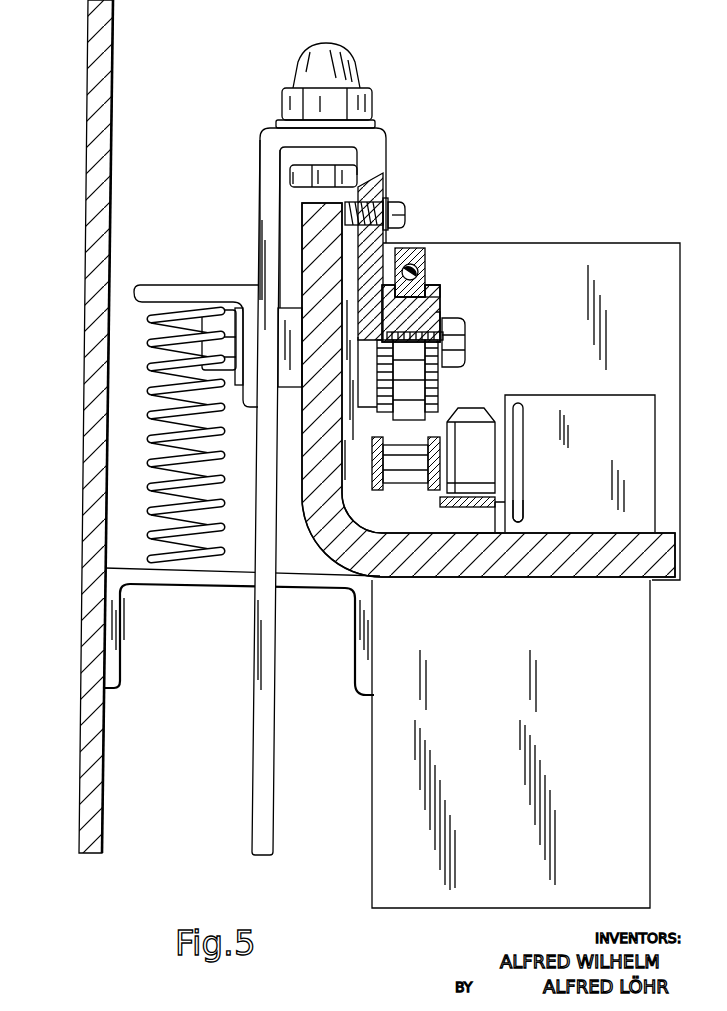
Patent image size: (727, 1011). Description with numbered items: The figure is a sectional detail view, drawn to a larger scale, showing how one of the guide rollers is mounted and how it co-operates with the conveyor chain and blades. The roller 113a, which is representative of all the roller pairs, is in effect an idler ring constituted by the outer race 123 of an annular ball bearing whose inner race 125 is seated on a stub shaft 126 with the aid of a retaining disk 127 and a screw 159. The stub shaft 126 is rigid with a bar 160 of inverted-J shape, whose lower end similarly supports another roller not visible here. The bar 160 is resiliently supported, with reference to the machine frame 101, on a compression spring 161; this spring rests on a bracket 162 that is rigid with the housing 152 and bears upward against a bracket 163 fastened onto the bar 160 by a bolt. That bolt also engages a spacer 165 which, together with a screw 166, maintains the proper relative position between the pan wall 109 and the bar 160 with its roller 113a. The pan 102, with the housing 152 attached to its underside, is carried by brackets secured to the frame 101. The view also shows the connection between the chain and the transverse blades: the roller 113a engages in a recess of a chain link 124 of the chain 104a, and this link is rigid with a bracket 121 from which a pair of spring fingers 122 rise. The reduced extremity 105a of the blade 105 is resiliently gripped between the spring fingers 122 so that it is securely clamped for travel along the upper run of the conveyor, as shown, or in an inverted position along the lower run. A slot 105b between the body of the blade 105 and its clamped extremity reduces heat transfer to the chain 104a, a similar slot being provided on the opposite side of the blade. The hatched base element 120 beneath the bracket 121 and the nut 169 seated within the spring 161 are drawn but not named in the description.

The machine frame 101 is at (90, 16).
The pan 102 is at (585, 565).
The chain 104a is at (375, 470).
The transverse blade 105 is at (616, 398).
The reduced extremity 105a is at (514, 458).
The slot 105b is at (521, 500).
The pan wall 109 is at (303, 205).
The guide roller 113a is at (432, 388).
The support foot 120 is at (490, 525).
The bracket 121 is at (460, 522).
The spring fingers 122 is at (448, 522).
The outer race 123 is at (428, 254).
The chain link 124 is at (413, 470).
The inner race 125 is at (441, 289).
The stub shaft 126 is at (441, 318).
The retaining disk 127 is at (441, 301).
The housing 152 is at (384, 762).
The screw 159 is at (466, 332).
The bar 160 is at (256, 790).
The compression spring 161 is at (144, 404).
The bracket 162 is at (355, 655).
The bracket 163 is at (152, 283).
The spacer 165 is at (283, 300).
The screw 166 is at (398, 202).
The nut 169 is at (214, 303).